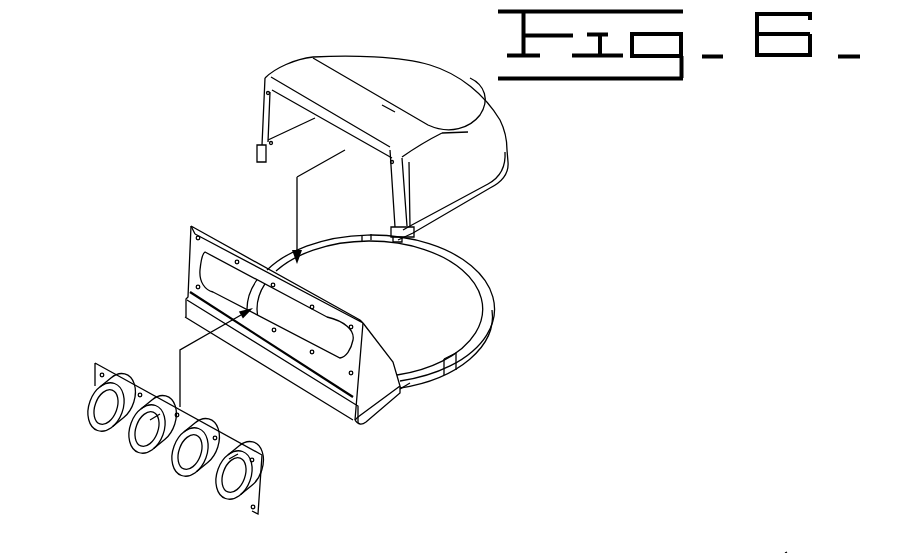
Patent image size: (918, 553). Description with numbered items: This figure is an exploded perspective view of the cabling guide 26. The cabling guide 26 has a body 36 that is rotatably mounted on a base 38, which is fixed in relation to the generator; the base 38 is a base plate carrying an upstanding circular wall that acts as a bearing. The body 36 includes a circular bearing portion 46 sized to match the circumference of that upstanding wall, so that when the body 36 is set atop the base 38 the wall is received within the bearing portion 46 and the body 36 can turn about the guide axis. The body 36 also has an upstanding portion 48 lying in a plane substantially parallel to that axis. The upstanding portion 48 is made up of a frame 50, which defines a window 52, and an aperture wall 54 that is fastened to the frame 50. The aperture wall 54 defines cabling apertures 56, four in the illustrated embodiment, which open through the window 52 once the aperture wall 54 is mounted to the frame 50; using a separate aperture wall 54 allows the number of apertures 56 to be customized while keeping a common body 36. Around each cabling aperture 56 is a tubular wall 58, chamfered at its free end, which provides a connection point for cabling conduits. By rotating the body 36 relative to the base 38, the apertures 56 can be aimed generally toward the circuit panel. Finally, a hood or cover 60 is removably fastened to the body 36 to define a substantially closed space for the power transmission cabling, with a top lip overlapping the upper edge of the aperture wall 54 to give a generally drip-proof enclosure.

The cabling guide 26 is at (114, 249).
The body 36 is at (421, 392).
The base 38 is at (788, 552).
The circular bearing portion 46 is at (450, 370).
The upstanding portion 48 is at (377, 388).
The frame 50 is at (197, 228).
The window 52 is at (298, 324).
The aperture wall 54 is at (262, 478).
The cabling apertures 56 is at (95, 423).
The tubular wall 58 is at (155, 418).
The cover 60 is at (407, 80).